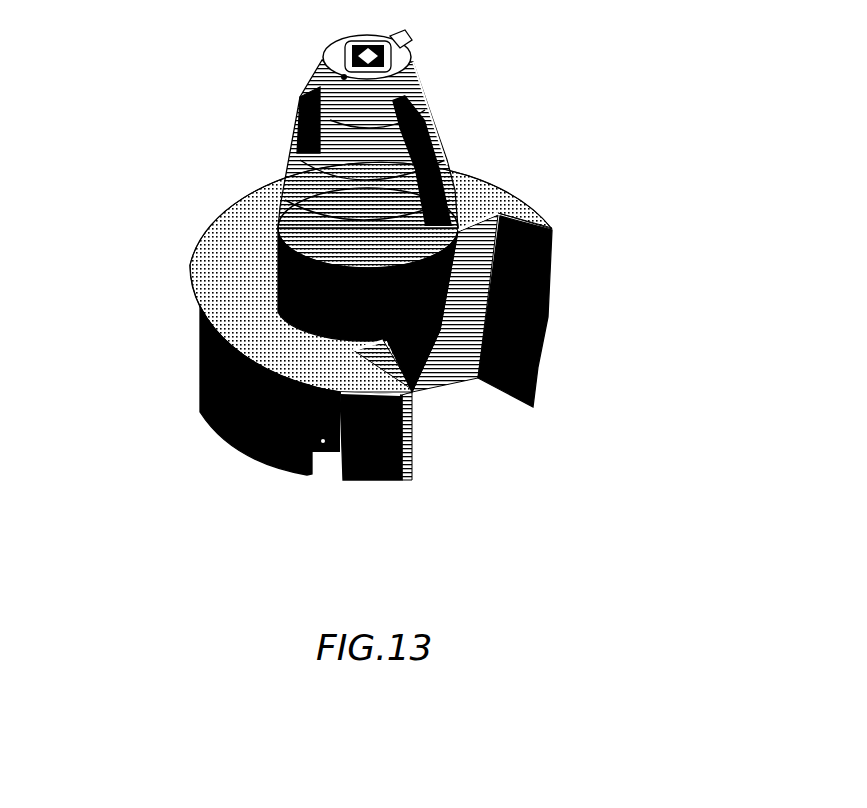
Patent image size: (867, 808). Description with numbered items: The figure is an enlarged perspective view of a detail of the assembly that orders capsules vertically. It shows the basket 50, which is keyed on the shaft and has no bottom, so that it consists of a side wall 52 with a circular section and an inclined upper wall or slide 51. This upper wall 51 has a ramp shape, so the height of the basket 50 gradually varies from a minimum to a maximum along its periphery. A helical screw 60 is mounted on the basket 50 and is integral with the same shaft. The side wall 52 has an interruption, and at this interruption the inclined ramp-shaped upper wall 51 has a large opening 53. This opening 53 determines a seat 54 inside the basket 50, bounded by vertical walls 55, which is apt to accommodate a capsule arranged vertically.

The basket 50 is at (373, 339).
The inclined upper wall or slide 51 is at (222, 270).
The side wall 52 is at (217, 403).
The large opening 53 is at (513, 218).
The seat 54 is at (460, 407).
The vertical walls 55 is at (462, 320).
The helical screw 60 is at (420, 90).